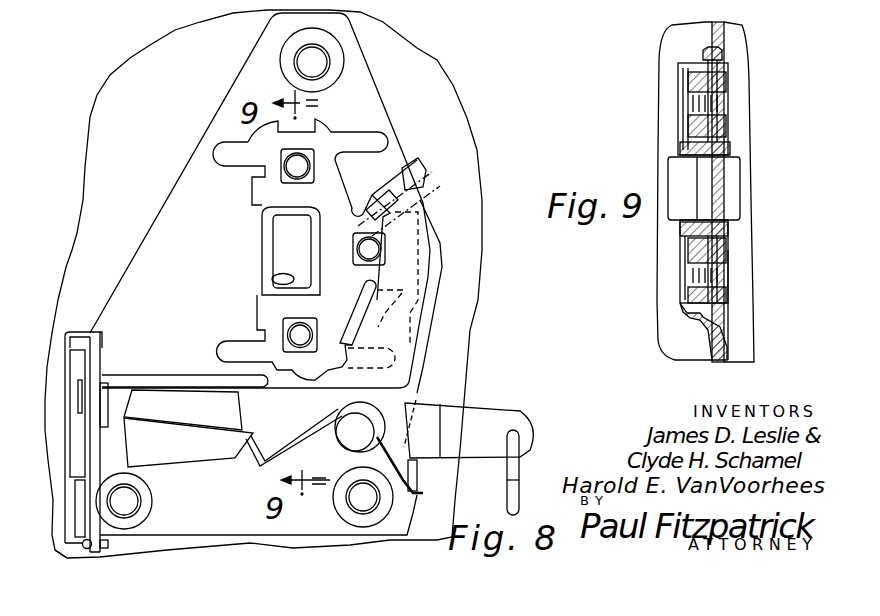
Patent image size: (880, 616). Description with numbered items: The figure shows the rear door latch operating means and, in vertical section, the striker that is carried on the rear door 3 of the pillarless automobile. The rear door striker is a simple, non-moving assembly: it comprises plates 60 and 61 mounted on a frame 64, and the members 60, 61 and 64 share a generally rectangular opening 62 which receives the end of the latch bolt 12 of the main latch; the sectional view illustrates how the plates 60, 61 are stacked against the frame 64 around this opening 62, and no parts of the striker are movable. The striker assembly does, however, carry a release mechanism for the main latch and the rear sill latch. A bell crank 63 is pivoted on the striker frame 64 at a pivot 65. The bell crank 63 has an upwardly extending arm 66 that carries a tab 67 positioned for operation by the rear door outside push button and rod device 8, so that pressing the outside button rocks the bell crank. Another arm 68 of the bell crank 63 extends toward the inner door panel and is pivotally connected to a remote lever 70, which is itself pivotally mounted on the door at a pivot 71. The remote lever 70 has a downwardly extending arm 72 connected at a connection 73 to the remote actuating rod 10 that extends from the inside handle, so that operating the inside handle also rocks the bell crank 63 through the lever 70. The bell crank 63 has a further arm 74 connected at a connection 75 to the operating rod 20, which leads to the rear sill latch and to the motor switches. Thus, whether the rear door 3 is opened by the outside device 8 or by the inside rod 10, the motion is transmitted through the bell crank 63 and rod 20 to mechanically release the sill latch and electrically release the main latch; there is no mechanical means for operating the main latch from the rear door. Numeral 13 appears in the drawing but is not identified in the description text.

In FIG. 8, the rear door 3 is at (460, 143).
In FIG. 9, the rear door 3 is at (737, 357).
In FIG. 8, the outside push button and rod device 8 is at (427, 178).
In FIG. 8, the actuating rod 10 is at (60, 551).
In FIG. 8, the latch bolt 12 is at (283, 250).
In FIG. 9, the latch bolt 12 is at (727, 173).
In FIG. 9, the nut assembly 13 is at (682, 249).
In FIG. 8, the operating rod 20 is at (517, 487).
In FIG. 8, the plate 60 is at (277, 227).
In FIG. 9, the plate 60 is at (683, 147).
In FIG. 9, the plate 61 is at (683, 298).
In FIG. 8, the rectangular opening 62 is at (272, 275).
In FIG. 9, the rectangular opening 62 is at (710, 223).
In FIG. 8, the bell crank 63 is at (396, 362).
In FIG. 8, the striker frame 64 is at (370, 110).
In FIG. 9, the striker frame 64 is at (720, 48).
In FIG. 8, the pivot 65 is at (357, 413).
In FIG. 8, the upwardly extending arm 66 is at (407, 313).
In FIG. 8, the tab 67 is at (407, 213).
In FIG. 8, the arm 68 is at (257, 450).
In FIG. 8, the remote lever 70 is at (97, 460).
In FIG. 8, the pivot 71 is at (104, 392).
In FIG. 8, the downwardly extending arm 72 is at (110, 513).
In FIG. 8, the connection 73 is at (100, 547).
In FIG. 8, the arm 74 is at (463, 420).
In FIG. 8, the connection 75 is at (513, 443).